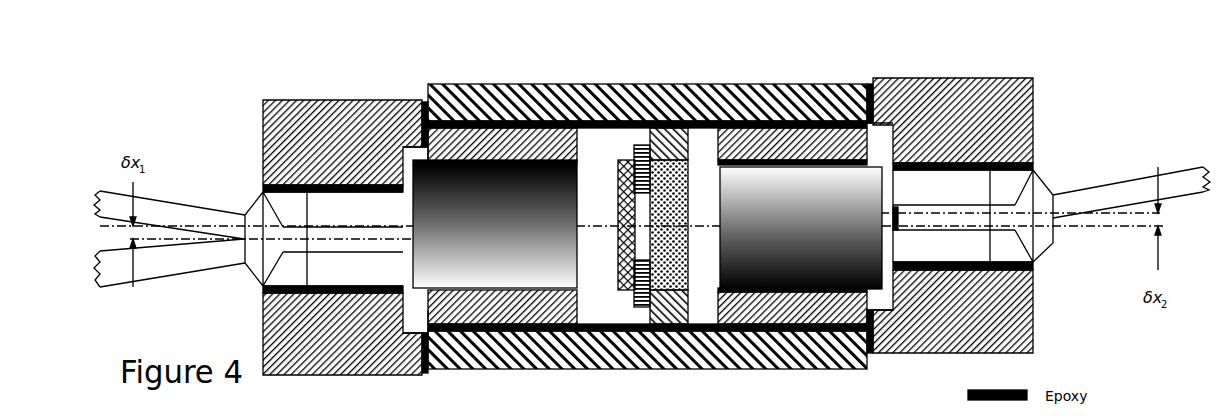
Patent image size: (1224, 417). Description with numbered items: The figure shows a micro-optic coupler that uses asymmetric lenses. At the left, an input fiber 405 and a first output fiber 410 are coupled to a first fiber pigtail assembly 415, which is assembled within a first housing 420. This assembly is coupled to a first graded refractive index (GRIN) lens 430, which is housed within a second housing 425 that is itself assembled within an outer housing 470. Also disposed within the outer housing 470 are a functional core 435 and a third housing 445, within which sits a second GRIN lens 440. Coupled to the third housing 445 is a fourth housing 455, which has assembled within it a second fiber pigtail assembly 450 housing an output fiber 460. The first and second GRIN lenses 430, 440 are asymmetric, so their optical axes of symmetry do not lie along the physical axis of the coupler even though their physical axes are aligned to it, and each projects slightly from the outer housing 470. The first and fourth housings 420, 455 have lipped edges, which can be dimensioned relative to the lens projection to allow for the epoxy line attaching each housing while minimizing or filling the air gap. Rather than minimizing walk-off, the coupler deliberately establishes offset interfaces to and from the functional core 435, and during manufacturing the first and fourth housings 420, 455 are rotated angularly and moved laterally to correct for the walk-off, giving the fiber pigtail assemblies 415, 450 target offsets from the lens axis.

The input fiber 405 is at (178, 210).
The first output fiber 410 is at (213, 253).
The first fiber pigtail assembly 415 is at (328, 210).
The first housing 420 is at (365, 100).
The second housing 425 is at (580, 217).
The first graded refractive index (GRIN) lens 430 is at (598, 182).
The functional core 435 is at (672, 145).
The second GRIN lens 440 is at (716, 207).
The third housing 445 is at (722, 372).
The second fiber pigtail assembly 450 is at (935, 192).
The fourth housing 455 is at (1008, 78).
The output fiber 460 is at (1130, 193).
The outer housing 470 is at (790, 100).